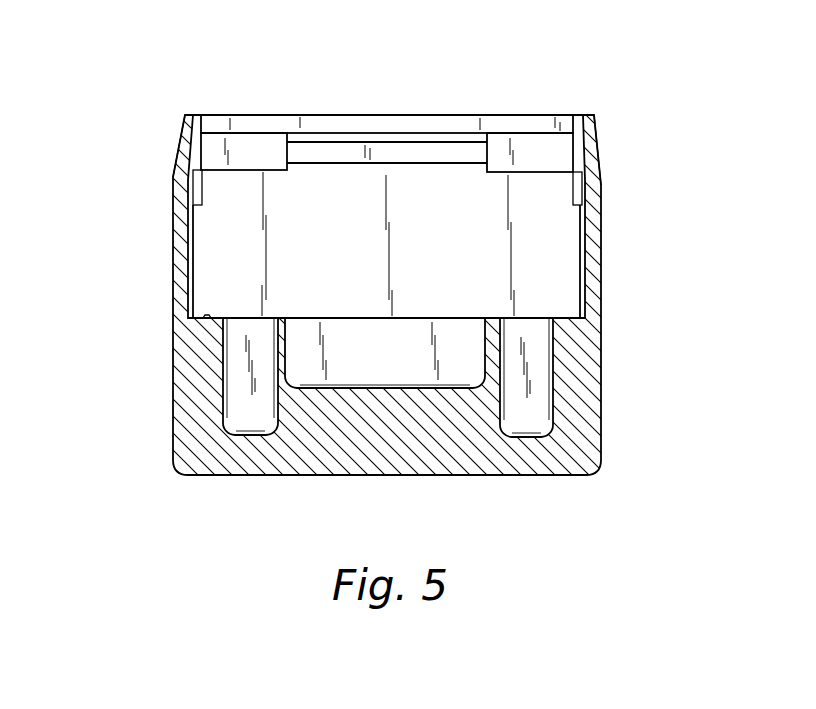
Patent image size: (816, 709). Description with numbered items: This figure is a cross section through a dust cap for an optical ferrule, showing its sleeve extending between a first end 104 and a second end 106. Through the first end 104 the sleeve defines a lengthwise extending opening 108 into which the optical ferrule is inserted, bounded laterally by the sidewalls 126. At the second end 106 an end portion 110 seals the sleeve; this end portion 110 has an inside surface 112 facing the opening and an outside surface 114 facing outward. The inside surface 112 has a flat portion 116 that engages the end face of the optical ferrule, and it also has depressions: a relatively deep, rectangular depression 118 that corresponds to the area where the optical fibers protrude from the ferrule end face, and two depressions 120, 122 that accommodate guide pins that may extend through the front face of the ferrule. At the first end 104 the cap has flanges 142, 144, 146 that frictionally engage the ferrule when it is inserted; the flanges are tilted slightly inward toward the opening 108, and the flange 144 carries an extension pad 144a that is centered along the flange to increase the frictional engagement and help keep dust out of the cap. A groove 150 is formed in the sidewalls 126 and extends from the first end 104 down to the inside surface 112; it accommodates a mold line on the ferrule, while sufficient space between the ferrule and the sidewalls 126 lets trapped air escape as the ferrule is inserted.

The first end 104 is at (610, 178).
The second end 106 is at (596, 487).
The lengthwise extending opening 108 is at (558, 257).
The end portion 110 is at (192, 423).
The inside surface 112 is at (207, 318).
The outside surface 114 is at (501, 476).
The flat portion 116 is at (493, 318).
The depression 118 is at (460, 328).
The depression 120 is at (542, 363).
The depression 122 is at (237, 350).
The sidewalls 126 is at (193, 243).
The flange 142 is at (190, 147).
The flange 144 is at (538, 122).
The extension pad 144a is at (367, 148).
The flange 146 is at (590, 140).
The groove 150 is at (185, 222).